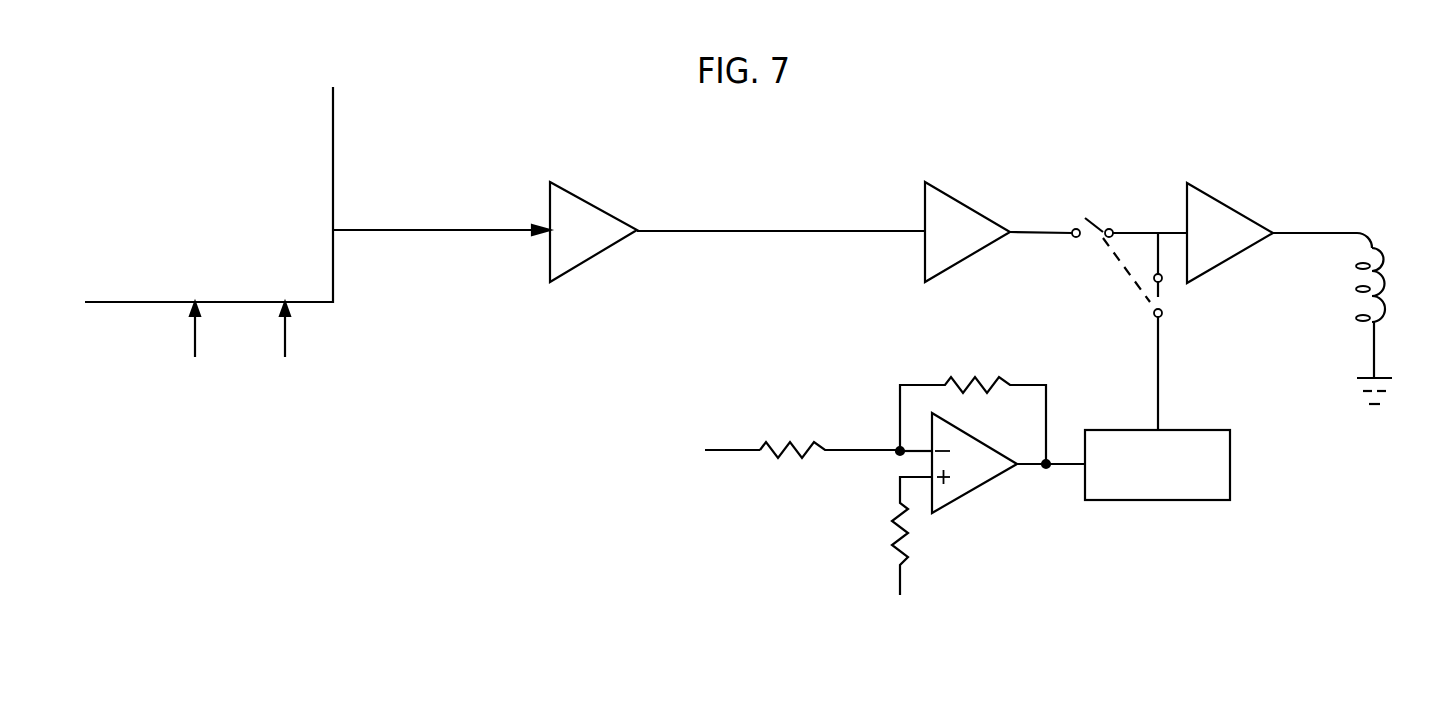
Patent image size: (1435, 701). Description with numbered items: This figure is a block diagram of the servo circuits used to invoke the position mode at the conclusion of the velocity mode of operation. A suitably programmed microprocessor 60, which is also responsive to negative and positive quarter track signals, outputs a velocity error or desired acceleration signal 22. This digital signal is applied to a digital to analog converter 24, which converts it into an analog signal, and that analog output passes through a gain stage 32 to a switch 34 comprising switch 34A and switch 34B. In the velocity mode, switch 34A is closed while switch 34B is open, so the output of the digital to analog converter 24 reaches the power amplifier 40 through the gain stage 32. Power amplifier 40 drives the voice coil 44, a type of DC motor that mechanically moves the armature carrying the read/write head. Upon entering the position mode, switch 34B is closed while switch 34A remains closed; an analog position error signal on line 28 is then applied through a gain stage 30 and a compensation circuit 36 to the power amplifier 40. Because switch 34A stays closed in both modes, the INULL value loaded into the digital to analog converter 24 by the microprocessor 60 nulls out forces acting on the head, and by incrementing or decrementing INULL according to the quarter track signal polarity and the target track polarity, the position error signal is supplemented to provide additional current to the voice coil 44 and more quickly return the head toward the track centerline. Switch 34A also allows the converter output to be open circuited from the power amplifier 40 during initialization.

The microprocessor 60 is at (213, 263).
The velocity error or desired acceleration signal 22 is at (378, 228).
The digital to analog converter 24 is at (605, 208).
The gain stage 32 is at (972, 205).
The switch 34 is at (1076, 304).
The switch 34A is at (1097, 225).
The switch 34B is at (1152, 296).
The power amplifier 40 is at (1233, 259).
The voice coil 44 is at (1378, 287).
The line 28 is at (742, 451).
The gain stage 30 is at (988, 484).
The compensation circuit 36 is at (1171, 430).